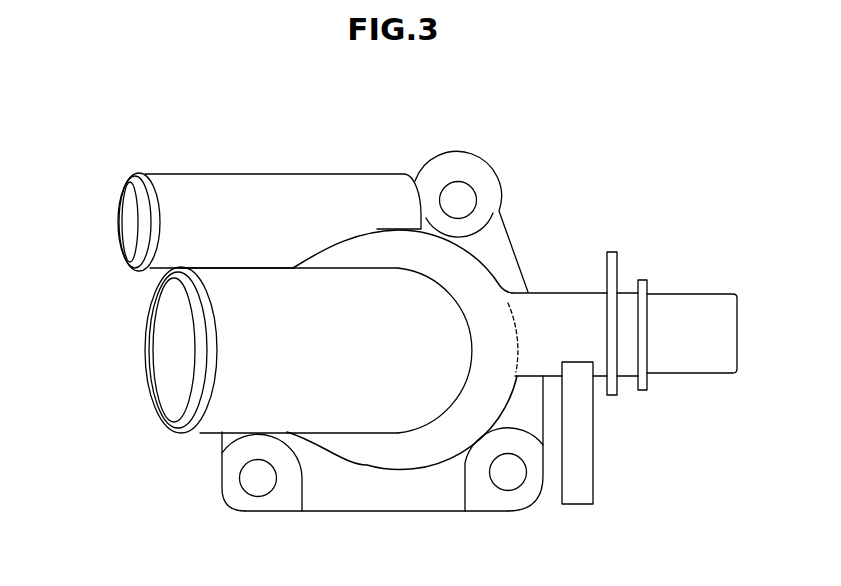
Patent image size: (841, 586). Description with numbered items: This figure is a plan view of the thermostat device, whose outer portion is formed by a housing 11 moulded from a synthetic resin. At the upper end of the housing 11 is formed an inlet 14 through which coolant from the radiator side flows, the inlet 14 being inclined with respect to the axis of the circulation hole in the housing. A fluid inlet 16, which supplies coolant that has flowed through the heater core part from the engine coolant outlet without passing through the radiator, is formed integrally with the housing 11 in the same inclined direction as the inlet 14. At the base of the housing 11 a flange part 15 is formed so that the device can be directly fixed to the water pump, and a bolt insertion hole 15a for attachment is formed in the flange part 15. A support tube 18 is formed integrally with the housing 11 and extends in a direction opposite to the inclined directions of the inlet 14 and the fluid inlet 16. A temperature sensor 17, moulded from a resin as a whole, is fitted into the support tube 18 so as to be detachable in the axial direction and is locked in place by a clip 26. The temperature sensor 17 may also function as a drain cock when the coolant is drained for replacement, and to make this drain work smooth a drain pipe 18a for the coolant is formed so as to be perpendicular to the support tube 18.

The housing 11 is at (378, 250).
The inlet 14 is at (163, 355).
The flange part 15 is at (402, 500).
The bolt insertion hole 15a is at (460, 196).
The fluid inlet 16 is at (123, 230).
The temperature sensor 17 is at (677, 270).
The support tube 18 is at (558, 307).
The drain pipe 18a is at (582, 473).
The clip 26 is at (618, 258).